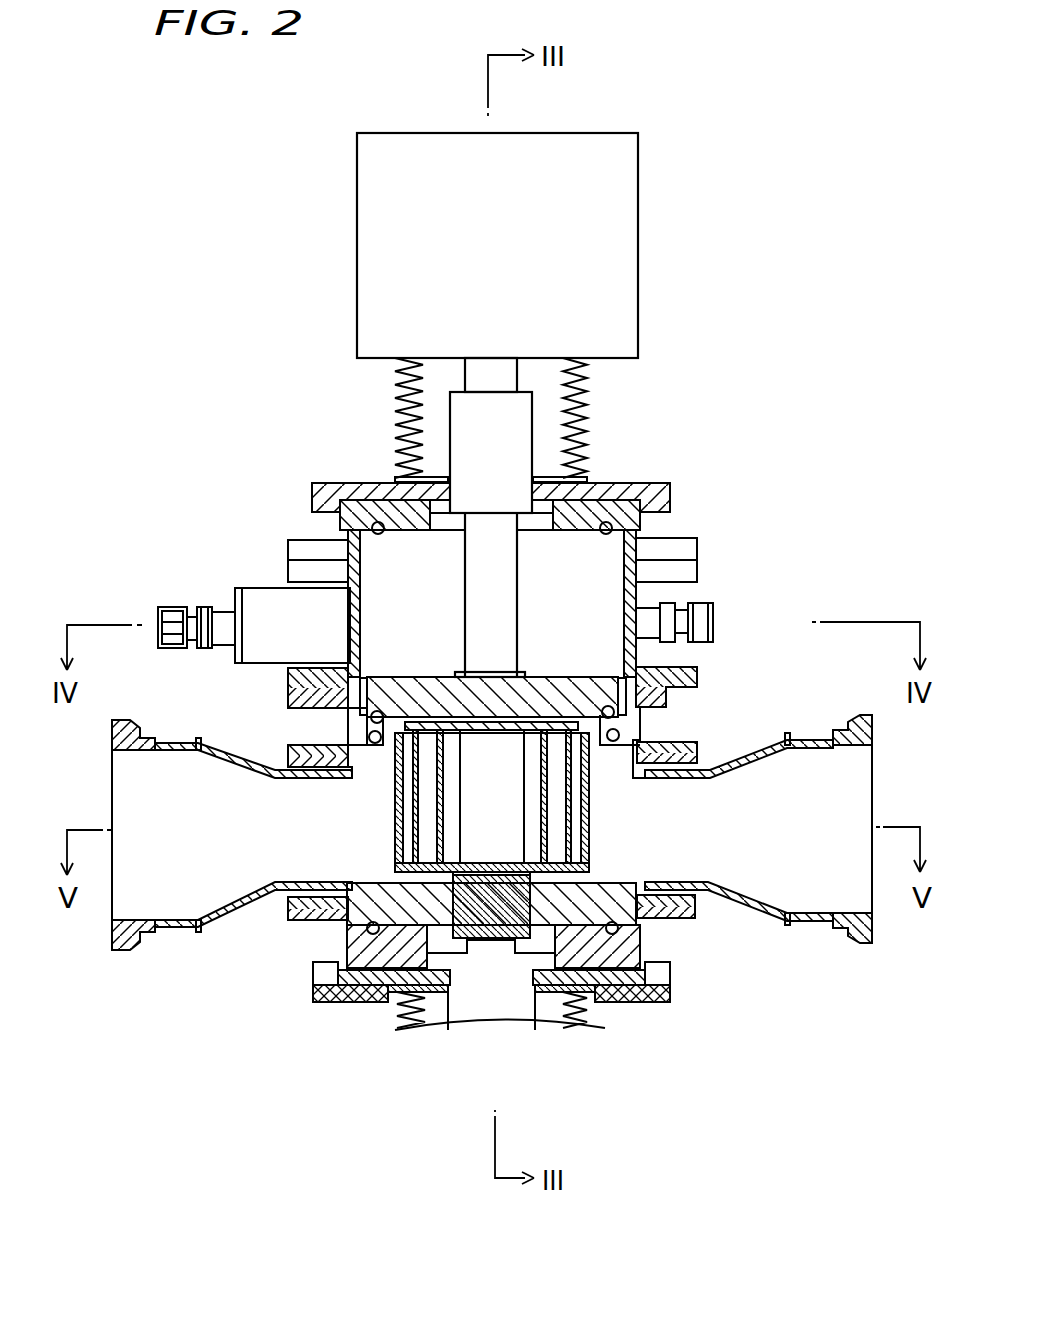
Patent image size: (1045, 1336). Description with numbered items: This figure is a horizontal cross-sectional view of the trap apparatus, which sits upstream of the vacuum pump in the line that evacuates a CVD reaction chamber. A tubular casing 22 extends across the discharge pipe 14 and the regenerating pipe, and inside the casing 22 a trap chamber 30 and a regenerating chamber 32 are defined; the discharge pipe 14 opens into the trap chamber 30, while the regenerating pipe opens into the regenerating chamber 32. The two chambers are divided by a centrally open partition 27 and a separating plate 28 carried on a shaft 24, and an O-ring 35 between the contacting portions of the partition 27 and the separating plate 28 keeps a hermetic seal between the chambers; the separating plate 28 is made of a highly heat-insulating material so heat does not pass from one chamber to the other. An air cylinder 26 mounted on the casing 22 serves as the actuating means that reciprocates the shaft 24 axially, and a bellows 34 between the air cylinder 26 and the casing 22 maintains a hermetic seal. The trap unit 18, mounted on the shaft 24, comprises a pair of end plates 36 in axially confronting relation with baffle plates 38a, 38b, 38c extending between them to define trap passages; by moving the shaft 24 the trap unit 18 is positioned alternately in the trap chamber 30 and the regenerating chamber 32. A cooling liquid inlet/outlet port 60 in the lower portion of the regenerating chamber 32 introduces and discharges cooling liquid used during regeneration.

The discharge pipe 14 is at (218, 917).
The trap unit 18 is at (614, 762).
The tubular casing 22 is at (640, 922).
The shaft 24 is at (500, 575).
The air cylinder 26 is at (640, 289).
The partition 27 is at (365, 722).
The separating plate 28 is at (645, 680).
The trap chamber 30 is at (358, 853).
The regenerating chamber 32 is at (403, 553).
The bellows 34 is at (588, 397).
The O-ring 35 is at (625, 717).
The end plates 36 is at (420, 693).
The baffle plate 38a is at (440, 808).
The baffle plate 38b is at (558, 848).
The baffle plate 38c is at (600, 905).
The cooling liquid inlet/outlet port 60 is at (223, 592).